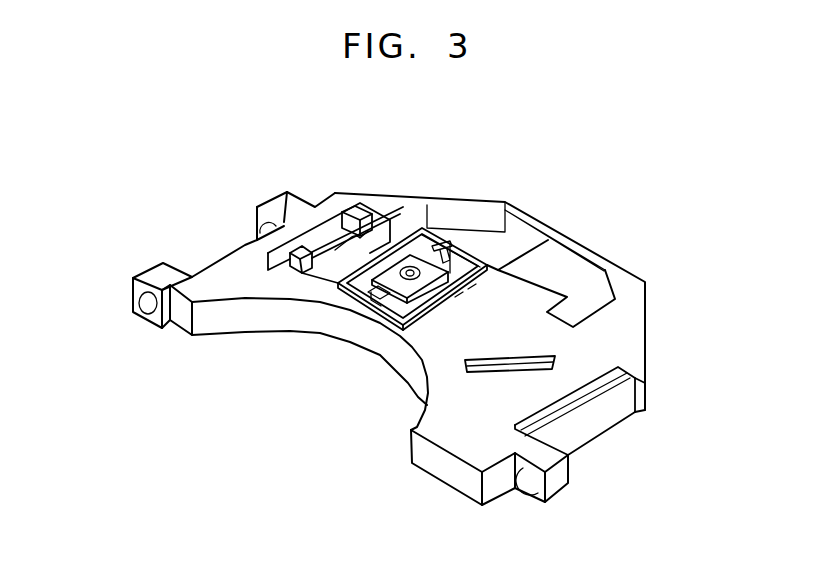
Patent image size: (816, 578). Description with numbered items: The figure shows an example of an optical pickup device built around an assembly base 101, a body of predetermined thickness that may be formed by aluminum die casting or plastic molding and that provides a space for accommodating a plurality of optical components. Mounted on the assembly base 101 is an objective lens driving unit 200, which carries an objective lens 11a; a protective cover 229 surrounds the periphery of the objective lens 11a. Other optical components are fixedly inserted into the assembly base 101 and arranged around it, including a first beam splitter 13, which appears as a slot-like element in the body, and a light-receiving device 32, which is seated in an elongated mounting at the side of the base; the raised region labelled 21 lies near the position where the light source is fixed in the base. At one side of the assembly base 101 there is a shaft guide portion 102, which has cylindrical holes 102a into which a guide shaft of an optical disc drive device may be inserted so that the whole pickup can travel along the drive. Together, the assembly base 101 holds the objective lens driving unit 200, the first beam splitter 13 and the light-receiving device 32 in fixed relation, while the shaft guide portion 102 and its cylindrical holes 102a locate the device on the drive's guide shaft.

The assembly base 101 is at (230, 277).
The shaft guide portion 102 is at (152, 278).
The cylindrical hole 102a is at (147, 305).
The objective lens driving unit 200 is at (335, 229).
The objective lens 11a is at (407, 267).
The protective cover 229 is at (443, 245).
The support portion 21 is at (577, 275).
The first beam splitter 13 is at (540, 362).
The light-receiving device 32 is at (595, 425).